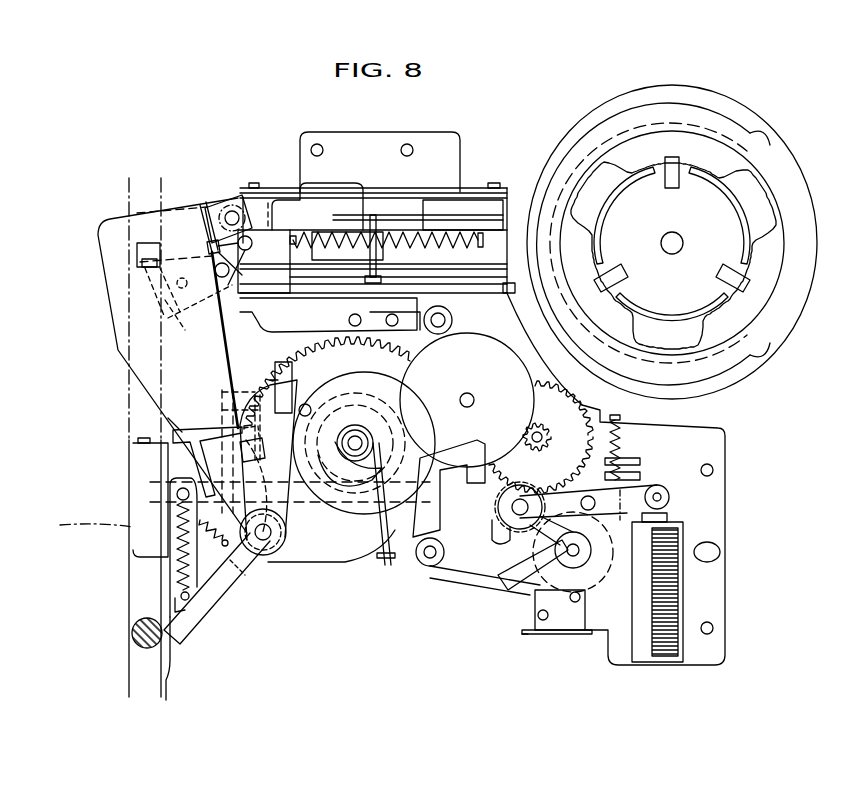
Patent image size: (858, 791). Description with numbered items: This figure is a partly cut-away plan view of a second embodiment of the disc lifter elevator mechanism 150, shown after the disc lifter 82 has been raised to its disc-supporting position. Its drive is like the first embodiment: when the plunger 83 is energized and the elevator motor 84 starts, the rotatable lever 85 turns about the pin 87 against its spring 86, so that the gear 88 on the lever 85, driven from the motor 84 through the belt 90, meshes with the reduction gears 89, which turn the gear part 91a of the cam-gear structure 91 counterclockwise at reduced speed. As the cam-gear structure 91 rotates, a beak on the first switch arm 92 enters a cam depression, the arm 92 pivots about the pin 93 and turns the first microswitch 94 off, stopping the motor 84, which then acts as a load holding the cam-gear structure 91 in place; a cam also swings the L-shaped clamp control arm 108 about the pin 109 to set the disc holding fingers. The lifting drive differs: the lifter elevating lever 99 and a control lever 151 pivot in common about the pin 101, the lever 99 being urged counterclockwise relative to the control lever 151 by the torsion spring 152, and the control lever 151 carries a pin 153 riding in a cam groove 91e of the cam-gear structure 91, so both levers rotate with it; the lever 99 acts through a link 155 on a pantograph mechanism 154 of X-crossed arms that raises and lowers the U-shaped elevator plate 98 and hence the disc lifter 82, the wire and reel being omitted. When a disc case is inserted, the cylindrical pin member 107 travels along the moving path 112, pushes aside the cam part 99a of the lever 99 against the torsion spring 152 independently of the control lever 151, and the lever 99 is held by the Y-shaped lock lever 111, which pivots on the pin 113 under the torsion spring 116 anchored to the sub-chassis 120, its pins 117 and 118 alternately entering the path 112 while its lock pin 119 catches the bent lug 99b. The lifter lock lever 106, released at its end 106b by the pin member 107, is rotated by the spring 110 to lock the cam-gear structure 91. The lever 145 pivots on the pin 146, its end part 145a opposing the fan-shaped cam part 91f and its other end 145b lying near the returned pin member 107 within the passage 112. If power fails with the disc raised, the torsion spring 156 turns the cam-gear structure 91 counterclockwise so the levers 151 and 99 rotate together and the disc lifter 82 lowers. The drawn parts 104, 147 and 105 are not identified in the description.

The disc lifter elevator mechanism 150 is at (536, 91).
The elevator plate 98 is at (627, 103).
The disc lifter 82 is at (812, 195).
The lifter elevating lever 99 is at (192, 217).
The cam part 99a is at (112, 292).
The bent lug 99b is at (215, 200).
The link 155 is at (283, 205).
The pantograph mechanism 154 is at (468, 188).
The pin 113 is at (207, 255).
The pin 117 is at (137, 256).
The lock pin 119 is at (360, 261).
The torsion spring 116 is at (150, 437).
The pin 118 is at (178, 312).
The lock lever 111 is at (235, 340).
The gear part 91a is at (284, 362).
The cam-gear structure 91 is at (272, 376).
The clamp control arm 108 is at (375, 333).
The pin 109 is at (452, 320).
The reduction gears 89 is at (543, 372).
The fan-shaped cam part 91f is at (364, 441).
The control lever 151 is at (262, 382).
The pin 153 is at (240, 400).
The disk 104 is at (478, 440).
The spring 86 is at (623, 446).
The gear 88 is at (522, 447).
The pin 87 is at (588, 496).
The rotatable lever 85 is at (657, 490).
The torsion spring 152 is at (196, 460).
The pin 146 is at (176, 494).
The moving path 112 is at (82, 530).
The spring 110 is at (178, 530).
The lever 145 is at (170, 548).
The spring 147 is at (207, 542).
The cam groove 91e is at (338, 472).
The pin 101 is at (270, 548).
The end part 145a is at (345, 562).
The torsion spring 156 is at (385, 582).
The pin 93 is at (428, 562).
The first switch arm 92 is at (468, 573).
The belt 90 is at (512, 580).
The elevator motor 84 is at (603, 578).
The plunger 83 is at (672, 585).
The sub-chassis 120 is at (727, 536).
The end part 145b is at (168, 608).
The lifter lock lever 106 is at (227, 588).
The pin member 107 is at (132, 635).
The first microswitch 94 is at (562, 622).
The block 105 is at (552, 664).
The end part 106b is at (166, 700).